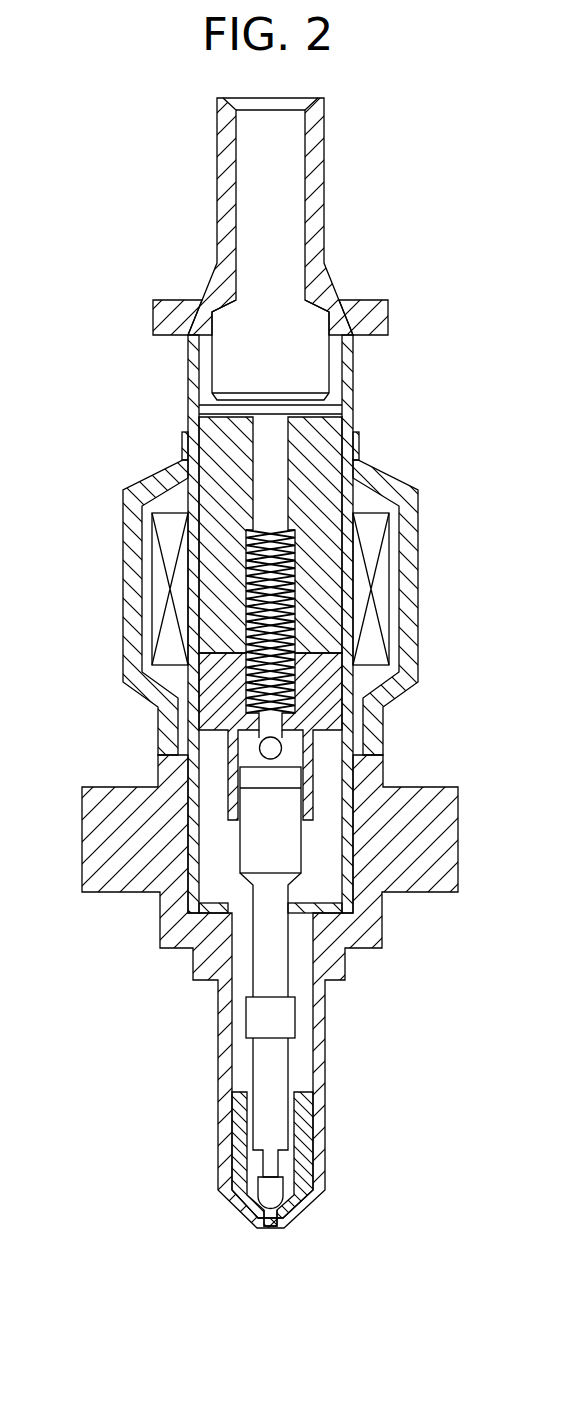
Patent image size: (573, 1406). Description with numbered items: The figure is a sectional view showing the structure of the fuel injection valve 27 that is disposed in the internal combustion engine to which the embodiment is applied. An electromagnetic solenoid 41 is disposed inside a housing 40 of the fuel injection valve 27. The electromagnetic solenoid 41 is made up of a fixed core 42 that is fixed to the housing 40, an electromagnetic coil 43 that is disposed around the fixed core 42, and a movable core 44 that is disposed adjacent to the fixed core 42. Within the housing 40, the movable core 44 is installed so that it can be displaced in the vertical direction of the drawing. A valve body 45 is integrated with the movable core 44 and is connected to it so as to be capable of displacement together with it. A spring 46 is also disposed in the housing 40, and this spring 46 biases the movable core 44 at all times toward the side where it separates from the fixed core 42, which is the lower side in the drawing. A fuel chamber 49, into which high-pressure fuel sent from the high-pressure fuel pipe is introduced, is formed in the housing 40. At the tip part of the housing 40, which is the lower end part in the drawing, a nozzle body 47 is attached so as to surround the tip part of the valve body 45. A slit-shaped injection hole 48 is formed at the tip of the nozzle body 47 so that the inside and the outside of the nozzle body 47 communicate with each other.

The fuel injection valve 27 is at (176, 219).
The housing 40 is at (455, 842).
The electromagnetic solenoid 41 is at (268, 624).
The fixed core 42 is at (334, 444).
The electromagnetic coil 43 is at (158, 578).
The movable core 44 is at (333, 680).
The valve body 45 is at (278, 1052).
The spring 46 is at (292, 582).
The nozzle body 47 is at (307, 1133).
The injection hole 48 is at (270, 1223).
The fuel chamber 49 is at (217, 880).